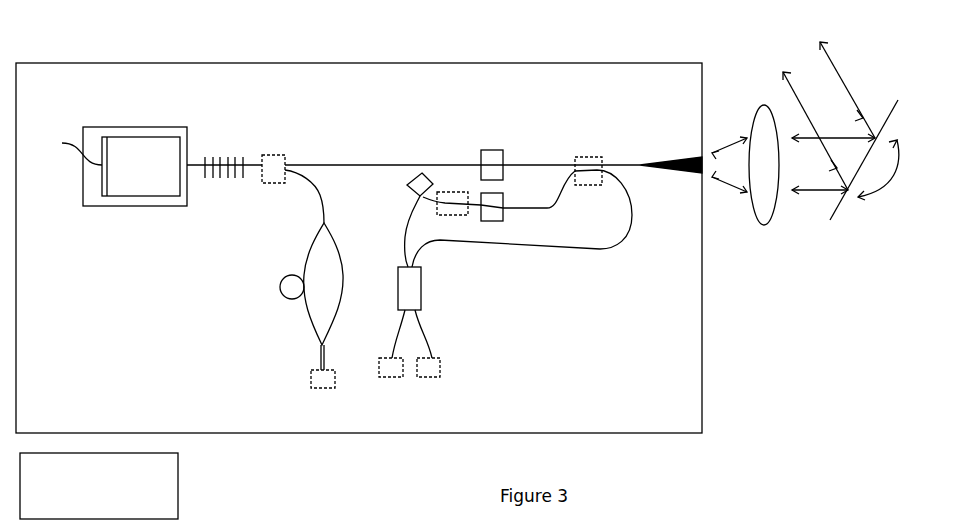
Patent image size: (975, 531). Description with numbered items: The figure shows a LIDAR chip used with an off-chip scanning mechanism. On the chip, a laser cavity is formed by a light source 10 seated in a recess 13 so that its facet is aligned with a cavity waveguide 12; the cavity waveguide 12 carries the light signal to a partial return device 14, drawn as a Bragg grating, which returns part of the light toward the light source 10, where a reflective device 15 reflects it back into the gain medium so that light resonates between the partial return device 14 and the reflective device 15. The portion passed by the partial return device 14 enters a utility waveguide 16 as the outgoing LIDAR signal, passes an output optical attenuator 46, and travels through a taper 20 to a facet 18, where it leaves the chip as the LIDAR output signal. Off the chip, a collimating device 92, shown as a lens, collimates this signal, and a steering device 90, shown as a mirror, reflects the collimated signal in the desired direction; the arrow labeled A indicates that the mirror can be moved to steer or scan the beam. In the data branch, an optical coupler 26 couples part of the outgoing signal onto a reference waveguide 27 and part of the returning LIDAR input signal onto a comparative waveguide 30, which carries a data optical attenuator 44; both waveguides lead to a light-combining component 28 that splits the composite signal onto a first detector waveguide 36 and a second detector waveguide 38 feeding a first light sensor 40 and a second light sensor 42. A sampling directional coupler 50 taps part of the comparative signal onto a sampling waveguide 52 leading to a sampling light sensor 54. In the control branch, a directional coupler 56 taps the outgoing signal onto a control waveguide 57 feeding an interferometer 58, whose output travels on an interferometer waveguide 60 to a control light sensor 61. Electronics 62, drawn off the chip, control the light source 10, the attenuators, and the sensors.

The light source 10 is at (133, 196).
The cavity waveguide 12 is at (191, 164).
The recess 13 is at (133, 127).
The partial return device 14 is at (230, 187).
The reflective device 15 is at (72, 146).
The utility waveguide 16 is at (323, 164).
The facet 18 is at (703, 163).
The taper 20 is at (680, 157).
The optical coupler 26 is at (598, 155).
The reference waveguide 27 is at (603, 250).
The light-combining component 28 is at (421, 280).
The comparative waveguide 30 is at (553, 208).
The first detector waveguide 36 is at (397, 333).
The second detector waveguide 38 is at (428, 340).
The first light sensor 40 is at (388, 377).
The second light sensor 42 is at (435, 377).
The data optical attenuator 44 is at (503, 205).
The output optical attenuator 46 is at (477, 150).
The sampling directional coupler 50 is at (443, 215).
The sampling waveguide 52 is at (424, 198).
The sampling light sensor 54 is at (407, 185).
The directional coupler 56 is at (273, 155).
The control waveguide 57 is at (313, 183).
The interferometer 58 is at (272, 285).
The interferometer waveguide 60 is at (321, 362).
The control light sensor 61 is at (311, 374).
The electronics 62 is at (178, 495).
The steering device 90 is at (832, 218).
The collimating device 92 is at (753, 112).
The arrow indicating mirror movement A is at (880, 190).